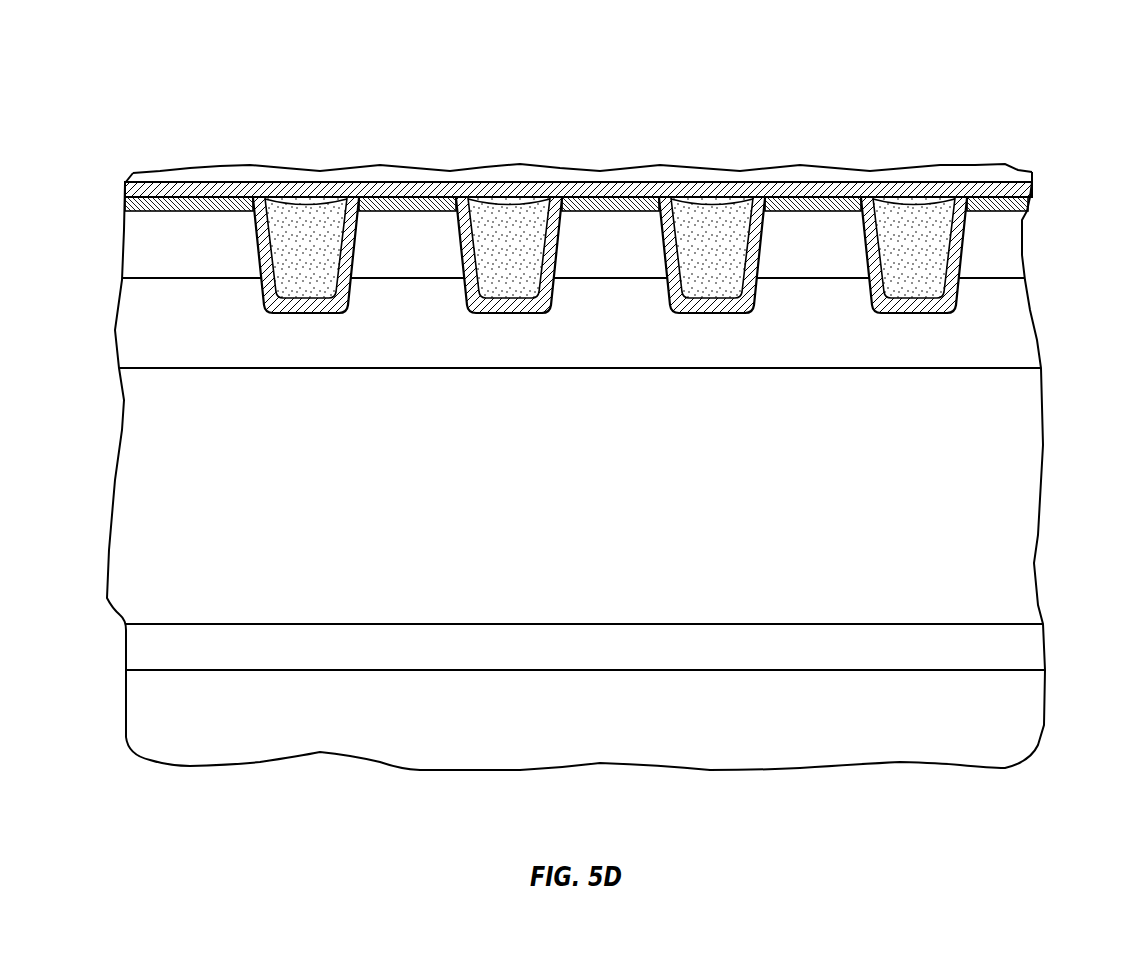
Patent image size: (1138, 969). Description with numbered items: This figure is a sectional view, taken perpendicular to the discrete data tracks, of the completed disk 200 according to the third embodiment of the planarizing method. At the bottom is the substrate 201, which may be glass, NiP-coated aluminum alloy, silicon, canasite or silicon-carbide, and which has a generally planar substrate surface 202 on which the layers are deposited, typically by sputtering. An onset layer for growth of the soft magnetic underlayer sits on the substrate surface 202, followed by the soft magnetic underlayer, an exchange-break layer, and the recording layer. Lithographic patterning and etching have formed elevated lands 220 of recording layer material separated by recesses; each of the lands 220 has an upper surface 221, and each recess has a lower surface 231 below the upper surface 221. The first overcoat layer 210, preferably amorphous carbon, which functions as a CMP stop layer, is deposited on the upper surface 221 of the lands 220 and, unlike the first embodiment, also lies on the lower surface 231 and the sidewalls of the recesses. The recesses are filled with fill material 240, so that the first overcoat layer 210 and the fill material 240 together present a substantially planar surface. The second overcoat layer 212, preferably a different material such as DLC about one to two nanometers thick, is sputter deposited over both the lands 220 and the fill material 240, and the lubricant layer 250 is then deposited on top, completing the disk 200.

The disk 200 is at (214, 56).
The substrate 201 is at (1032, 718).
The substrate surface 202 is at (1030, 668).
The first overcoat layer 210 is at (209, 207).
The second overcoat layer 212 is at (172, 186).
The lands 220 is at (210, 265).
The upper surface of the lands 221 is at (180, 213).
The lower surface of the recesses 231 is at (309, 314).
The fill material 240 is at (300, 225).
The lubricant layer 250 is at (200, 200).